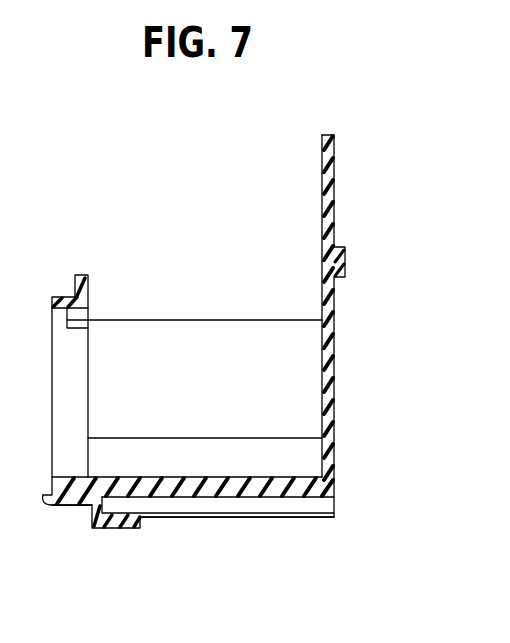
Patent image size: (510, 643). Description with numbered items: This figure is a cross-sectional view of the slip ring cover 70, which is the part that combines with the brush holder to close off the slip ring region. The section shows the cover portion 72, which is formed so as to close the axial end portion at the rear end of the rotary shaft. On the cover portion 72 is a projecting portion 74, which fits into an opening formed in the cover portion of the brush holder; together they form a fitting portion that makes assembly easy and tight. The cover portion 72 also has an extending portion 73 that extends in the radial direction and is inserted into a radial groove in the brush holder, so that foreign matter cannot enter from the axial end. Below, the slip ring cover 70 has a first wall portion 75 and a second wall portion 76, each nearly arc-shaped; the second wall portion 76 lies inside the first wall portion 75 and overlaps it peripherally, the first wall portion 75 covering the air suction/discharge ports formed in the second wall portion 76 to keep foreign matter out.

The slip ring cover 70 is at (345, 461).
The cover portion 72 is at (326, 395).
The extending portion 73 is at (333, 180).
The projecting portion 74 is at (345, 275).
The first wall portion 75 is at (187, 517).
The second wall portion 76 is at (262, 481).